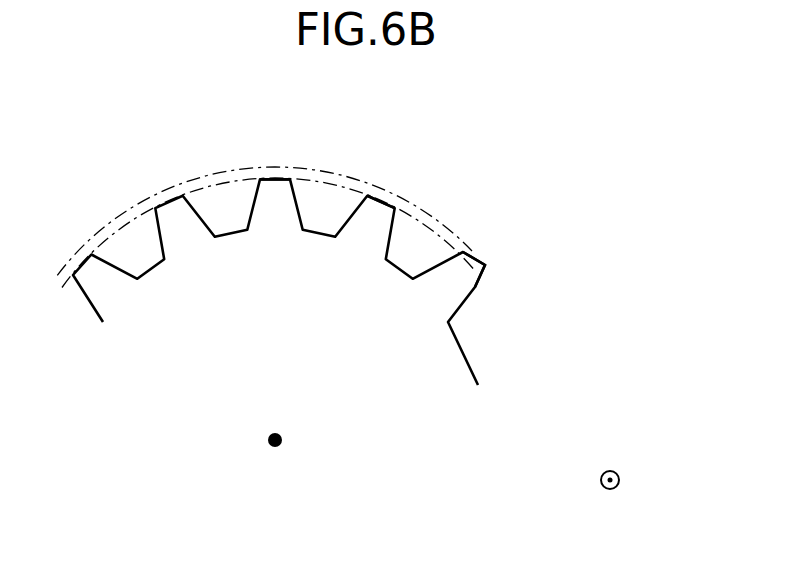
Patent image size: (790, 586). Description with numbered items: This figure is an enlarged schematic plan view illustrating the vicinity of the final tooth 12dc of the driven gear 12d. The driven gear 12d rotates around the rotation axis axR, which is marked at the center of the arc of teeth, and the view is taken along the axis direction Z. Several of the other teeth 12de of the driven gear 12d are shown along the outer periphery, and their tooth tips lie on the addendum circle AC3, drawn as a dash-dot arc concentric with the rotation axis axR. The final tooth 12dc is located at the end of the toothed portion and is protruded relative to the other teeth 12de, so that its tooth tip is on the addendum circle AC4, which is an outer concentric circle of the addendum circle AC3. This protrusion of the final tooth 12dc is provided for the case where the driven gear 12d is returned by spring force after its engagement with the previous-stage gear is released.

The driven gear 12d is at (530, 337).
The other teeth 12de is at (277, 179).
The final tooth 12dc is at (476, 251).
The addendum circle AC3 is at (408, 213).
The addendum circle AC4 is at (443, 222).
The rotation axis axR is at (275, 434).
The Z axis direction Z is at (620, 482).